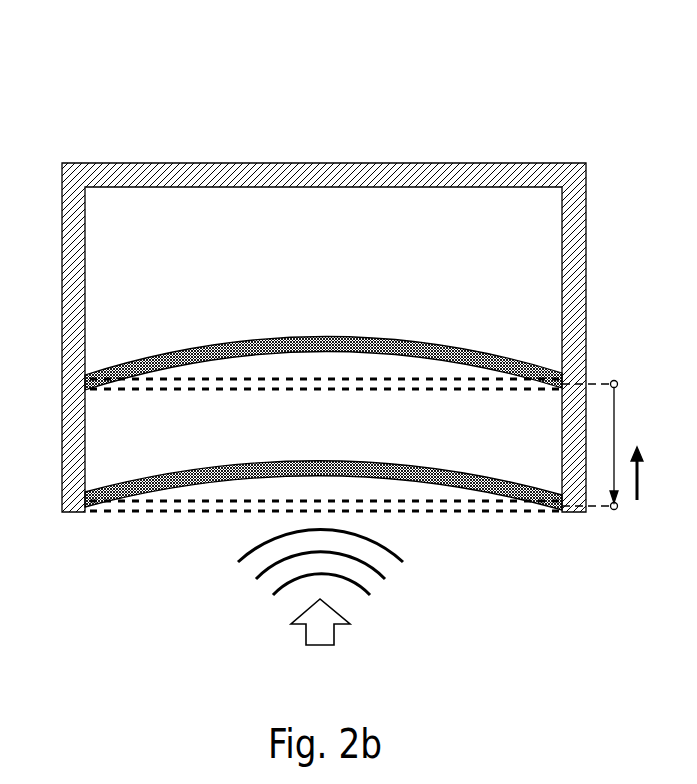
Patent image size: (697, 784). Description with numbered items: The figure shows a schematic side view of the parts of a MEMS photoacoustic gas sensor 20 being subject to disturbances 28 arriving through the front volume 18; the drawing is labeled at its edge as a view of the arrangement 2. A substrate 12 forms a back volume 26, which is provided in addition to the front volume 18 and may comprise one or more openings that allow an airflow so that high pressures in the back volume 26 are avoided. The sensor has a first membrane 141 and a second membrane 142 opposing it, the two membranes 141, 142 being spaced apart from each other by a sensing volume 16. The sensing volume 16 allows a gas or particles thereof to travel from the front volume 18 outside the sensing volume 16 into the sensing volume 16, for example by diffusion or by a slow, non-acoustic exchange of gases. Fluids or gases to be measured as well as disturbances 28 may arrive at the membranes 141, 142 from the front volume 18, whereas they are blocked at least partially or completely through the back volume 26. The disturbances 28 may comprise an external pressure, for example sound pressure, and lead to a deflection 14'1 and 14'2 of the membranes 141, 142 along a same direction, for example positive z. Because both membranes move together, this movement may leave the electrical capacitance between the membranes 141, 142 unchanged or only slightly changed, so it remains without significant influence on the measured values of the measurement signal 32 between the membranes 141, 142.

The loudspeaker arrangement 2 is at (2, 217).
The MEMS photoacoustic gas sensor 20 is at (546, 67).
The substrate 12 is at (575, 212).
The back volume 26 is at (342, 227).
The first membrane 141 is at (174, 505).
The second membrane 142 is at (175, 386).
The deflected state of first membrane 14'1 is at (323, 451).
The deflected state of second membrane 14'2 is at (323, 331).
The sensing volume 16 is at (101, 459).
The front volume 18 is at (110, 541).
The disturbances 28 is at (389, 605).
The measurement signal 32 is at (615, 412).